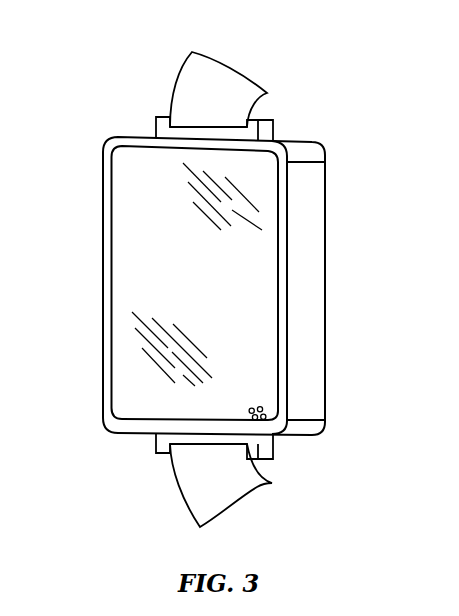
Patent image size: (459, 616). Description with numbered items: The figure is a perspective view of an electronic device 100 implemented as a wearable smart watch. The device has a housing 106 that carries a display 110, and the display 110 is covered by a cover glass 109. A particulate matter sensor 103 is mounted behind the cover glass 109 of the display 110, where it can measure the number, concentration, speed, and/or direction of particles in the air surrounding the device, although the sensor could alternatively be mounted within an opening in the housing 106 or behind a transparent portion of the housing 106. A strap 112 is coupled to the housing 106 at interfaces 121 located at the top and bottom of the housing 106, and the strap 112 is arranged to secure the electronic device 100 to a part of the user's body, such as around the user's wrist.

The electronic device 100 is at (115, 104).
The particulate matter sensor 103 is at (265, 412).
The housing 106 is at (109, 428).
The cover glass 109 is at (175, 279).
The display 110 is at (125, 227).
The strap 112 is at (215, 83).
The interfaces 121 is at (233, 148).